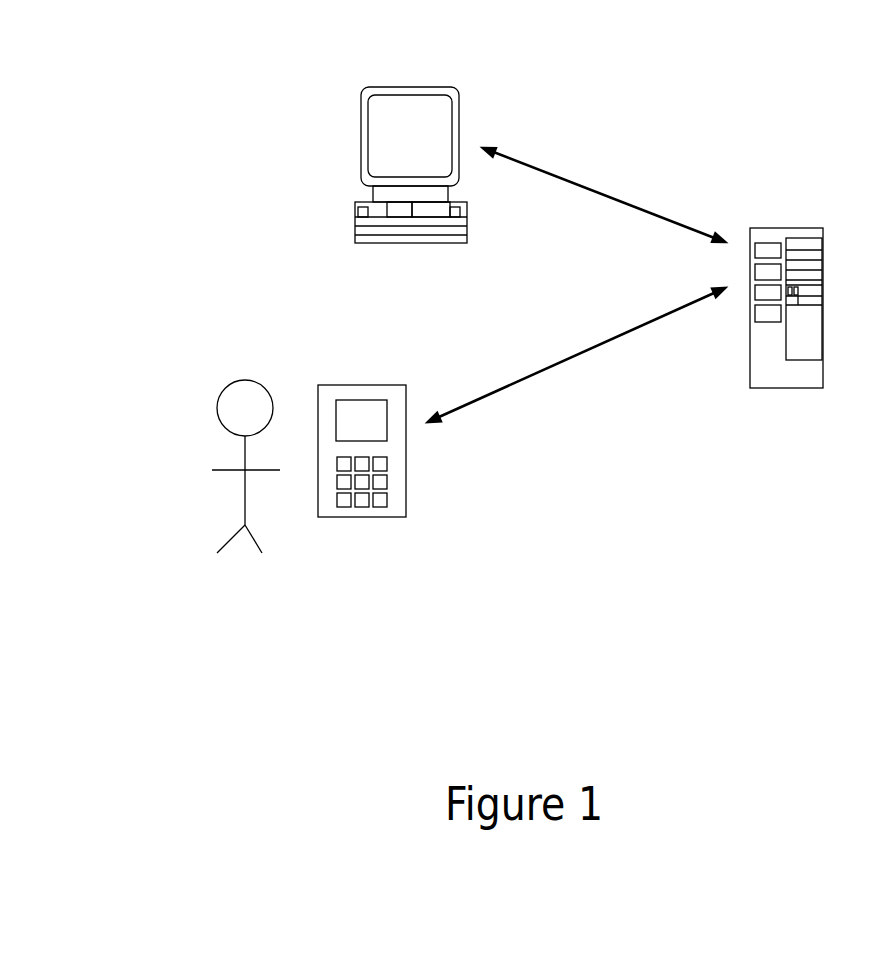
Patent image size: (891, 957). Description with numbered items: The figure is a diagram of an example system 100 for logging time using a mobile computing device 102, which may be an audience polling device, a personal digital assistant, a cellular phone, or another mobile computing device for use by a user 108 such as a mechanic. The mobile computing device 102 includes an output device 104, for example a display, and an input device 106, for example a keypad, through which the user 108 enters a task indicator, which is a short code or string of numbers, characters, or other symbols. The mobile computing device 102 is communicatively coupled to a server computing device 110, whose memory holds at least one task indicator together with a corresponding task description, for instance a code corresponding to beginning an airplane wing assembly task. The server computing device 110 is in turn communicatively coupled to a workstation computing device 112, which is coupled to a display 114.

The system 100 is at (757, 90).
The mobile computing device 102 is at (406, 477).
The output device 104 is at (382, 410).
The input device 106 is at (363, 507).
The user 108 is at (244, 488).
The server computing device 110 is at (786, 332).
The workstation computing device 112 is at (356, 193).
The display 114 is at (380, 133).